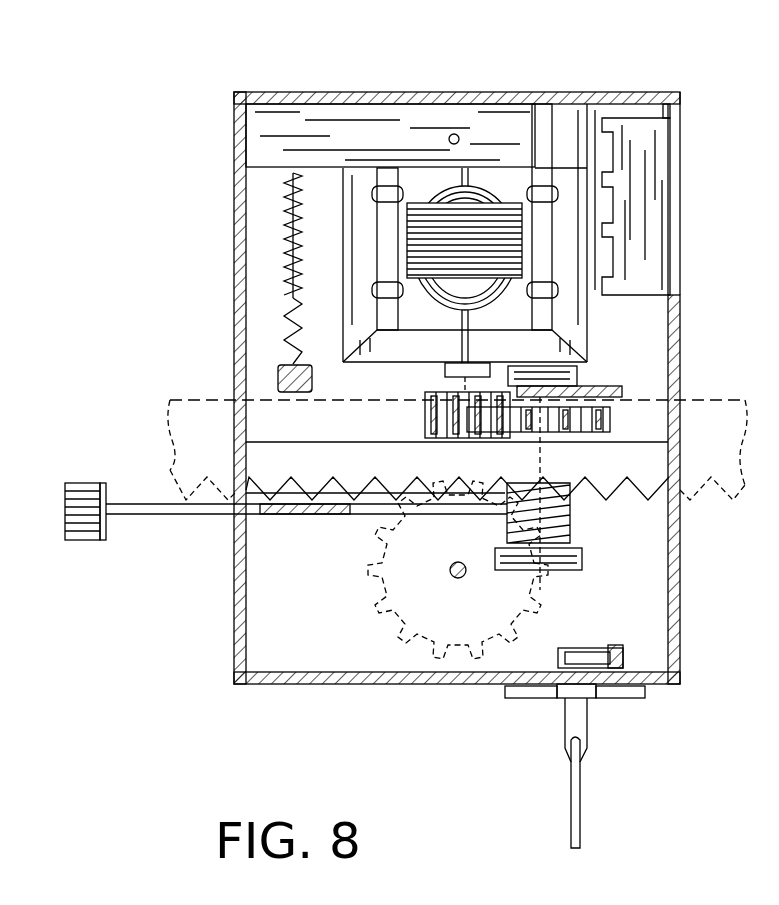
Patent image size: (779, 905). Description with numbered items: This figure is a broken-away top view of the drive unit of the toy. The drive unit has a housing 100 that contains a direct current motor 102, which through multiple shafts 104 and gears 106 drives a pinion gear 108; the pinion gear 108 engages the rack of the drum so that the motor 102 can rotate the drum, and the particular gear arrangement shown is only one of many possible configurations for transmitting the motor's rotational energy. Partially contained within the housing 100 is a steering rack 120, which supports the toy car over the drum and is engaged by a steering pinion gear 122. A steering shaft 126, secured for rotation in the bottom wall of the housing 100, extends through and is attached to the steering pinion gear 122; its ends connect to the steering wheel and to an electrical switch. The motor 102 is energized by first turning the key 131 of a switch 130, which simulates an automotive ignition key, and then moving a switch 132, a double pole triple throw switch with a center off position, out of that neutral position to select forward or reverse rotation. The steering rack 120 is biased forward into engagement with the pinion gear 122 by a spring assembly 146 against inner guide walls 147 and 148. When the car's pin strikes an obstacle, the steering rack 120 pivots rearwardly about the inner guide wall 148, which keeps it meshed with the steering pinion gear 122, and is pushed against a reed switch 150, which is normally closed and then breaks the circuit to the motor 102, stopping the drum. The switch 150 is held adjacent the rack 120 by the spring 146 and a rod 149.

The housing 100 is at (382, 92).
The direct current motor 102 is at (497, 250).
The shafts 104 is at (455, 378).
The gears 106 is at (424, 420).
The pinion gear 108 is at (80, 483).
The steering rack 120 is at (696, 415).
The steering pinion gear 122 is at (400, 630).
The steering shaft 126 is at (450, 568).
The switch 130 is at (578, 652).
The key 131 is at (570, 780).
The switch 132 is at (658, 240).
The spring assembly 146 is at (290, 277).
The inner guide wall 147 is at (290, 515).
The inner guide wall 148 is at (596, 393).
The rod 149 is at (286, 196).
The reed switch 150 is at (280, 367).